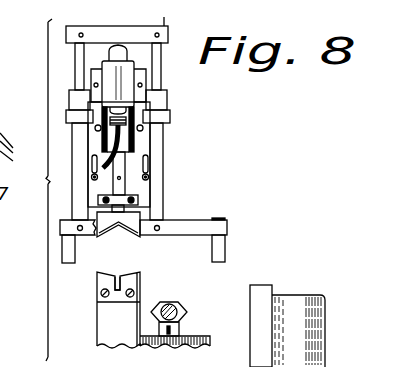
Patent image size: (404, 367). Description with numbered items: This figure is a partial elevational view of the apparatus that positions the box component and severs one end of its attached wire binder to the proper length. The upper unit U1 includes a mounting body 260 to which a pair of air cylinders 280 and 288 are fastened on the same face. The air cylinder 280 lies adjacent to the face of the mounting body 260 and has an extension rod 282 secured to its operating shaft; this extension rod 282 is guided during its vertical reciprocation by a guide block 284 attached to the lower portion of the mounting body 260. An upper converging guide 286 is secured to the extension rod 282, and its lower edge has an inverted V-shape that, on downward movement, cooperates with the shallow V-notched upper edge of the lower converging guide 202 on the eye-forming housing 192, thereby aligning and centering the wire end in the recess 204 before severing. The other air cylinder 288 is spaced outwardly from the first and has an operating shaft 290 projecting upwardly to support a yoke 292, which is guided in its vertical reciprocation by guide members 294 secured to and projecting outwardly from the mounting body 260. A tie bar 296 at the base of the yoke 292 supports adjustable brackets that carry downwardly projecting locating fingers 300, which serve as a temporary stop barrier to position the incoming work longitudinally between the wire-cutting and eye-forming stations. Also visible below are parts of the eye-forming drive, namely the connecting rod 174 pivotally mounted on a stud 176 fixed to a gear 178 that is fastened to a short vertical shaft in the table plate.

The mounting body 260 is at (165, 22).
The yoke 292 is at (62, 35).
The operating shaft 290 is at (118, 45).
The air cylinder 288 is at (112, 77).
The guide members 294 is at (67, 117).
The air cylinder 280 is at (164, 102).
The upper unit U1 is at (170, 151).
The extension rod 282 is at (121, 184).
The guide block 284 is at (137, 200).
The upper converging guide 286 is at (130, 221).
The tie bar 296 is at (224, 222).
The locating fingers 300 is at (62, 252).
The converging guide 202 is at (97, 281).
The housing 192 is at (102, 320).
The central recess 204 is at (117, 282).
The connecting rod 174 is at (165, 304).
The stud 176 is at (176, 330).
The gear 178 is at (203, 338).